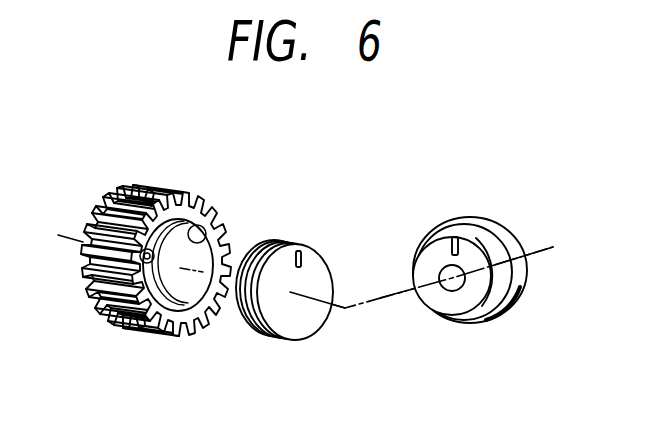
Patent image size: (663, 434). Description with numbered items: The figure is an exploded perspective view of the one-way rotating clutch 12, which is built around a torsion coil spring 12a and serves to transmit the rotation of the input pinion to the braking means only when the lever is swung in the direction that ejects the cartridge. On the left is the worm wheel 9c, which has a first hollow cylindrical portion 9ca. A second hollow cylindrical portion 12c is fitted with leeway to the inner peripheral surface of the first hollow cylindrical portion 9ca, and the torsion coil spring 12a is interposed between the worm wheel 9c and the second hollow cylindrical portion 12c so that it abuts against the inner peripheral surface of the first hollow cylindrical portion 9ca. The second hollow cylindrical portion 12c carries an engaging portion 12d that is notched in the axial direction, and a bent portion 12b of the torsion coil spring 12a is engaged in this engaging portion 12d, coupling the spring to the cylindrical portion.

The worm wheel 9c is at (153, 255).
The first hollow cylindrical portion 9ca is at (213, 215).
The one-way rotating clutch 12 is at (288, 274).
The torsion coil spring 12a is at (280, 243).
The bent portion 12b is at (322, 247).
The second hollow cylindrical portion 12c is at (466, 230).
The engaging portion 12d is at (453, 235).